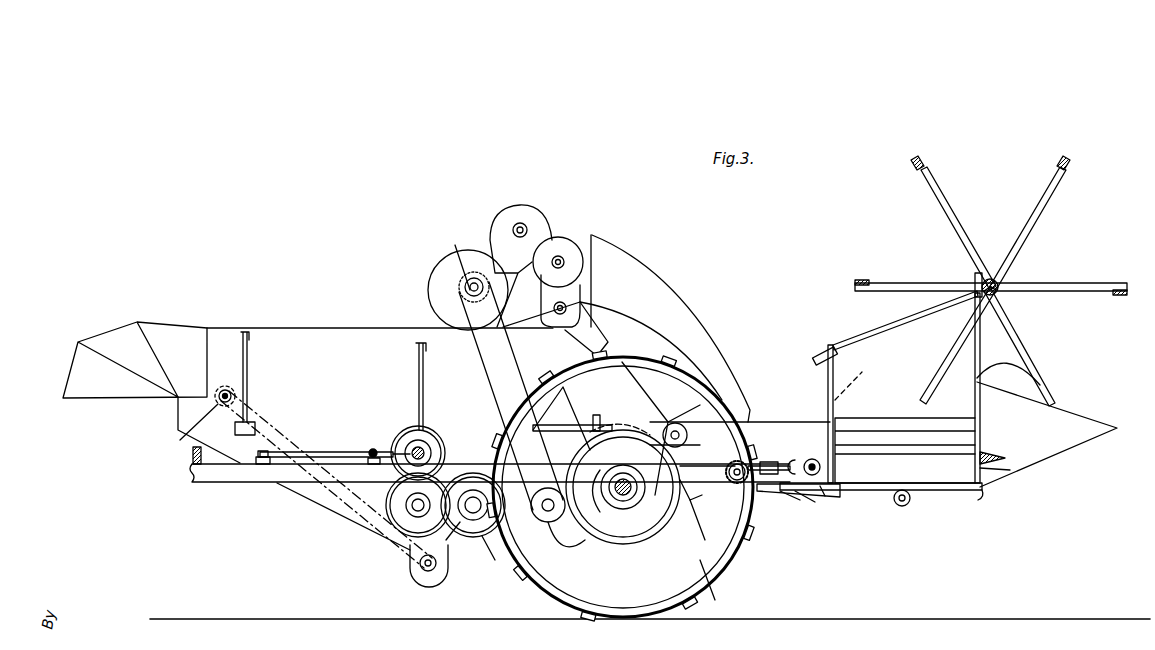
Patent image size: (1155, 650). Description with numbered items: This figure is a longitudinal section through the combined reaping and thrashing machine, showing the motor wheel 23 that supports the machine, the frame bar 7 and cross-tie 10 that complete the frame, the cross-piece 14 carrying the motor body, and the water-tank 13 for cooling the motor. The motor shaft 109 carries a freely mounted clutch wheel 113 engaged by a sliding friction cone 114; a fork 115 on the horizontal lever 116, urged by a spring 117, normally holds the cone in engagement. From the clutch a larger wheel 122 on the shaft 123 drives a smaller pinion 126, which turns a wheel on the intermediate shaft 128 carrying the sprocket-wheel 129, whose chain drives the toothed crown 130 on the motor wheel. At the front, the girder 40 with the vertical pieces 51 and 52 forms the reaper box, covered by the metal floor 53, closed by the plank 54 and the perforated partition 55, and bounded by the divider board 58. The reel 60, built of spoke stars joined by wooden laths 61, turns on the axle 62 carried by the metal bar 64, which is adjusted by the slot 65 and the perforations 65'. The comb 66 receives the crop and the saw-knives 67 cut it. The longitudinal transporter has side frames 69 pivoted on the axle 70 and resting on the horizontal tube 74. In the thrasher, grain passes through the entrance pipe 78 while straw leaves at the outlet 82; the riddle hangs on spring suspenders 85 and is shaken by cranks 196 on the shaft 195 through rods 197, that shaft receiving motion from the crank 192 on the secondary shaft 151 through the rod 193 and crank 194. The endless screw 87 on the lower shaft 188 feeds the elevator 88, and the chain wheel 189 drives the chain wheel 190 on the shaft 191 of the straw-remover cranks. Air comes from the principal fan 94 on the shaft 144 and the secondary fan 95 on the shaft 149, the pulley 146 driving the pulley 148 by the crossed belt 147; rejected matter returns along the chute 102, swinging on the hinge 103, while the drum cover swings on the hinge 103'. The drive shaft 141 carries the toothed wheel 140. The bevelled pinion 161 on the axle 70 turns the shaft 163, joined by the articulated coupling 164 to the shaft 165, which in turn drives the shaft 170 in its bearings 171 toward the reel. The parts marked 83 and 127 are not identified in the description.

The bar 7 is at (192, 478).
The cross-tie 10 is at (216, 465).
The water-tank 13 is at (262, 465).
The cross-piece 14 is at (334, 505).
The motor wheel 23 is at (580, 619).
The girder 40 is at (980, 500).
The vertical piece 51 is at (833, 346).
The vertical piece 52 is at (980, 342).
The floor 53 is at (934, 492).
The plank 54 is at (840, 465).
The partition 55 is at (862, 380).
The divider board 58 is at (1070, 402).
The reel 60 is at (1040, 220).
The rods or laths 61 is at (1068, 176).
The axle 62 is at (1000, 284).
The metal bar 64 is at (912, 330).
The longitudinal slot 65 is at (813, 350).
The perforations 65' is at (958, 278).
The comb 66 is at (1012, 470).
The saw-knives 67 is at (990, 455).
The side frames 69 is at (772, 422).
The axle 70 is at (735, 487).
The horizontal tube 74 is at (902, 507).
The entrance pipe 78 is at (622, 486).
The discharging outlet 82 is at (176, 407).
The hopper 83 is at (112, 338).
The spring suspenders 85 is at (248, 366).
The endless screw 87 is at (428, 586).
The elevator 88 is at (505, 227).
The principal fan blower 94 is at (575, 540).
The secondary fan blower 95 is at (445, 270).
The chute 102 is at (671, 328).
The hinge 103 is at (586, 271).
The hinge 103' is at (612, 351).
The shaft of the motor 109 is at (428, 440).
The coupling or clutch wheel 113 is at (419, 410).
The friction cone 114 is at (410, 440).
The fork 115 is at (400, 446).
The horizontal lever 116 is at (310, 450).
The spring 117 is at (370, 452).
The larger wheel 122 is at (366, 533).
The shaft 123 is at (396, 545).
The pinion wheel 126 is at (412, 540).
The link 127 is at (498, 560).
The intermediate shaft 128 is at (483, 538).
The sprocket-wheel 129 is at (545, 508).
The toothed crown 130 is at (637, 544).
The toothed wheel 140 is at (683, 444).
The shaft 141 is at (688, 434).
The shaft 144 is at (608, 545).
The pulley 146 is at (548, 540).
The crossed belt 147 is at (450, 330).
The pulley 148 is at (455, 248).
The shaft 149 is at (468, 287).
The secondary shaft 151 is at (700, 512).
The bevelled pinion 161 is at (755, 485).
The shaft 163 is at (775, 495).
The articulated coupling 164 is at (795, 500).
The shaft 165 is at (812, 504).
The shaft 170 is at (813, 458).
The bearings 171 is at (828, 492).
The lower shaft 188 is at (440, 582).
The chain wheel 189 is at (437, 567).
The chain wheel 190 is at (228, 386).
The shaft 191 is at (186, 434).
The crank 192 is at (722, 572).
The rod 193 is at (686, 505).
The crank 194 is at (608, 440).
The shaft 195 is at (672, 468).
The cranks 196 is at (598, 414).
The rods 197 is at (572, 425).